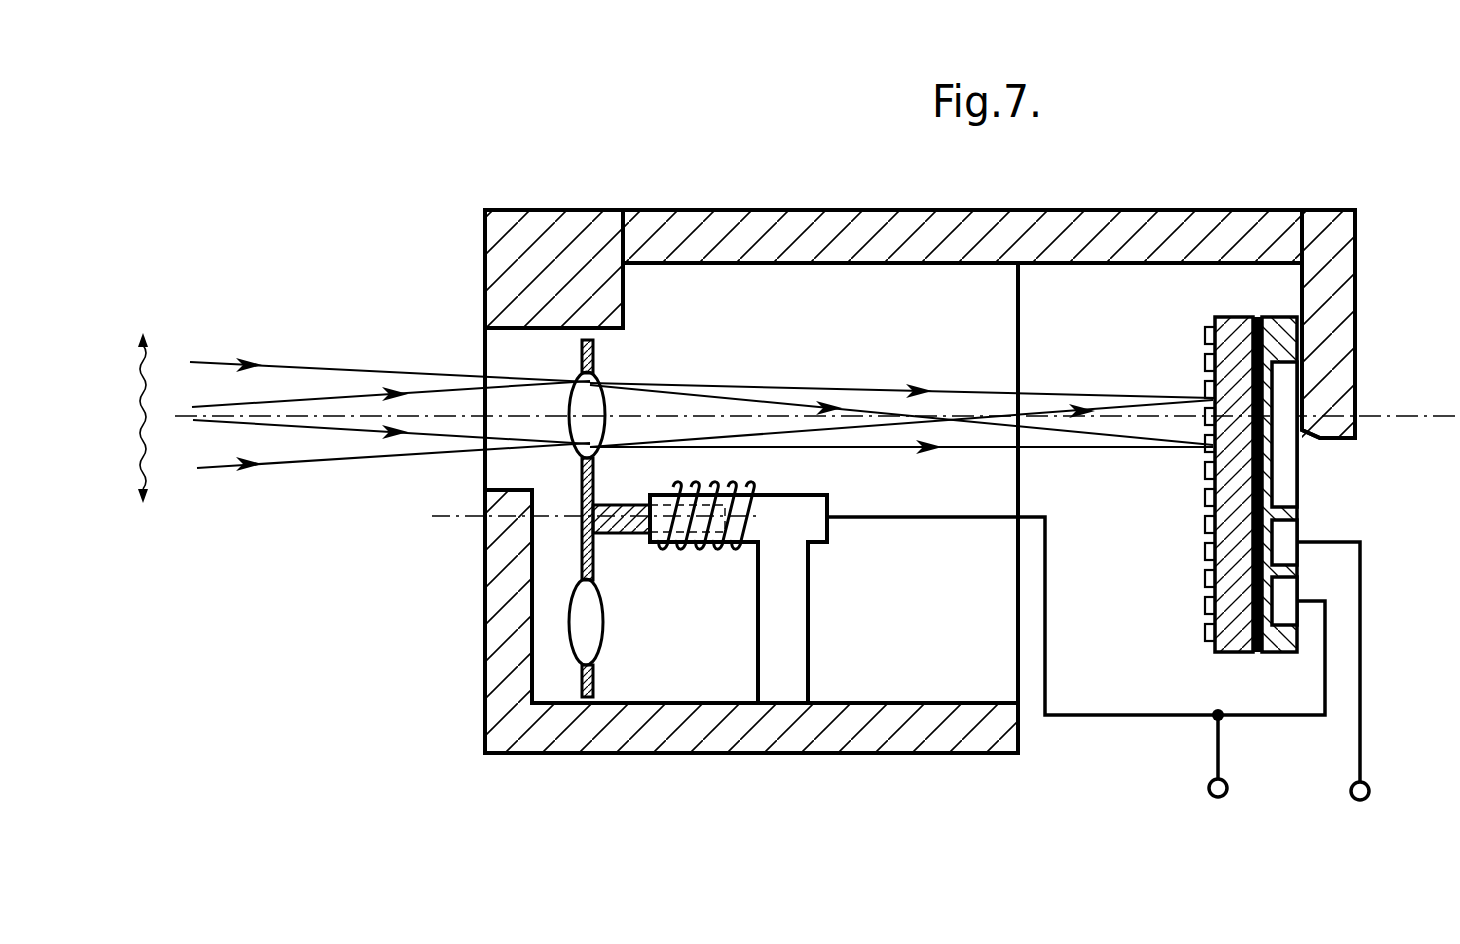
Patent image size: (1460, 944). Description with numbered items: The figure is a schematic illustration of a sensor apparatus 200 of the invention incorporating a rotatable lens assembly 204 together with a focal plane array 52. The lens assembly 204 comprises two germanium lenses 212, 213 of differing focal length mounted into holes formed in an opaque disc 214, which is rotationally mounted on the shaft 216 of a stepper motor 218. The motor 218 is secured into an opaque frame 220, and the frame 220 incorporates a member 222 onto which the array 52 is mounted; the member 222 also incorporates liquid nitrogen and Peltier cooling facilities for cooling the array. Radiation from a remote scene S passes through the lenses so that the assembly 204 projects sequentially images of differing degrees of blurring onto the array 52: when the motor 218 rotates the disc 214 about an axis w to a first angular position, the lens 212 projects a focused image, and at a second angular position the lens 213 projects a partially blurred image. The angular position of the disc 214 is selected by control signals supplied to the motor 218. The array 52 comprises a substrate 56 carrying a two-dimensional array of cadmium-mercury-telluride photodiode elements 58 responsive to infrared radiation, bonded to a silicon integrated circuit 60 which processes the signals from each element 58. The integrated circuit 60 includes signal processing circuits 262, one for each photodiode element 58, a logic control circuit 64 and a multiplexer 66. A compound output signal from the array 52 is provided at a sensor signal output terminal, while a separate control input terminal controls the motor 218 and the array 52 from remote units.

The sensor apparatus 200 is at (414, 332).
The lens assembly 204 is at (872, 200).
The opaque frame 220 is at (577, 232).
The member 222 is at (1335, 260).
The focal plane array 52 is at (1277, 417).
The substrate 56 is at (1258, 630).
The photodiode elements 58 is at (1192, 552).
The silicon integrated circuit 60 is at (1360, 484).
The signal processing circuits 262 is at (1306, 465).
The multiplexer 66 is at (1283, 531).
The logic control circuit 64 is at (1283, 590).
The germanium lens 212 is at (580, 623).
The germanium lens 213 is at (578, 432).
The opaque disc 214 is at (580, 546).
The shaft 216 is at (622, 533).
The stepper motor 218 is at (775, 521).